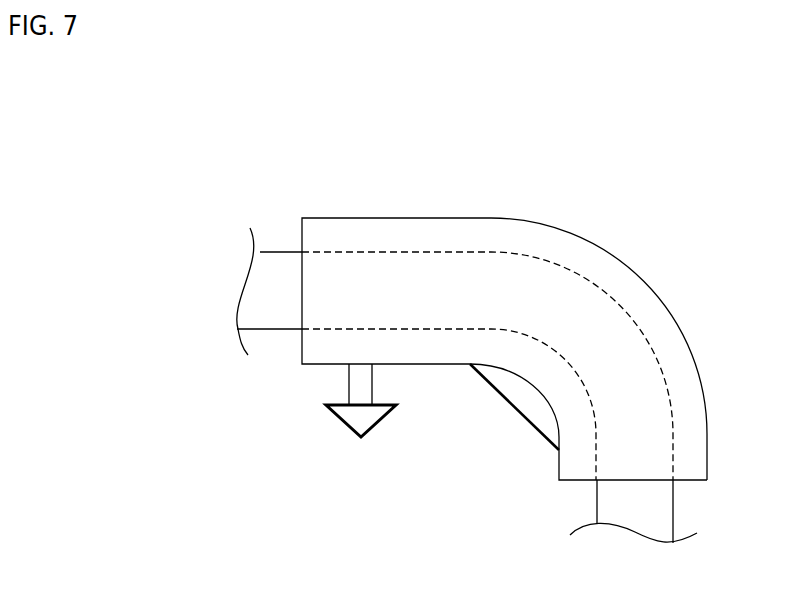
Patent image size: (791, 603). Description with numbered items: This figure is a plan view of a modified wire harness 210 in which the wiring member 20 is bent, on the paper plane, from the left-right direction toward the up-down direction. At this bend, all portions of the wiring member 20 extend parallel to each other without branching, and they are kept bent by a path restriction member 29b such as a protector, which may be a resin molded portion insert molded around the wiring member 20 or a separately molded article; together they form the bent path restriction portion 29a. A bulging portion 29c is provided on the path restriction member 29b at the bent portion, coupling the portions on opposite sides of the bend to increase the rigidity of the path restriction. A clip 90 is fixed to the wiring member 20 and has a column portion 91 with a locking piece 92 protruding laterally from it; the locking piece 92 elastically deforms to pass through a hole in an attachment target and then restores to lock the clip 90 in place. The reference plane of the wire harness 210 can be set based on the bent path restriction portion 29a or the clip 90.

The wire harness 210 is at (298, 116).
The wiring member 20 is at (270, 331).
The bent path restriction portion 29a is at (458, 218).
The path restriction member 29b is at (565, 477).
The bulging portion 29c is at (520, 407).
The clip 90 is at (440, 367).
The column portion 91 is at (363, 387).
The locking piece 92 is at (370, 417).